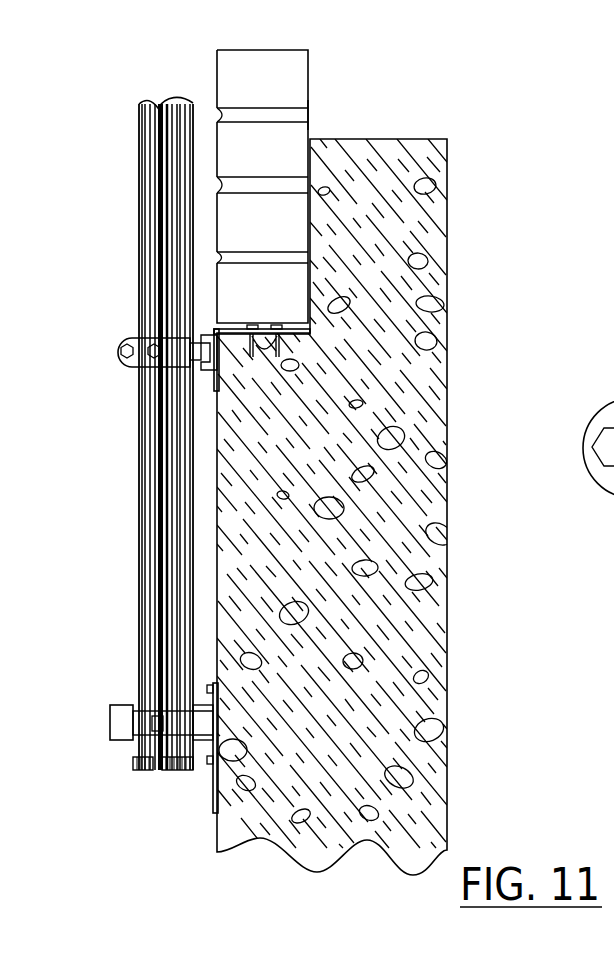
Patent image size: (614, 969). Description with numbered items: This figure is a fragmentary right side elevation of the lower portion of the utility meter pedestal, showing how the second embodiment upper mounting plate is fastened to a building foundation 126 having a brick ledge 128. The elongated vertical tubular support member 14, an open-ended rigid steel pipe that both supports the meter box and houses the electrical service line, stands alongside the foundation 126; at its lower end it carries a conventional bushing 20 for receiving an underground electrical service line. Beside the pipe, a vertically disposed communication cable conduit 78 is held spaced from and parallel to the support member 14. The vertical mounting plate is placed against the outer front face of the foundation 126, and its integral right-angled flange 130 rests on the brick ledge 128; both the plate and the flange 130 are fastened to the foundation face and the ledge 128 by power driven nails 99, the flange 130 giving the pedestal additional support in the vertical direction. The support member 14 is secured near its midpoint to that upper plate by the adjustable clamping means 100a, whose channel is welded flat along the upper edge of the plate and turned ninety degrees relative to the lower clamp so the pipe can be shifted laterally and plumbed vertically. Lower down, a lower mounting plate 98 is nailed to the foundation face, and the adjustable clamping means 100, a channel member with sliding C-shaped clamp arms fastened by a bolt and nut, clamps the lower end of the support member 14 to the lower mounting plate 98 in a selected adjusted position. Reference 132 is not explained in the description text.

The elongated vertical tubular support member 14 is at (150, 118).
The communication cable conduit 78 is at (183, 120).
The block side face 132 is at (309, 112).
The building foundation 126 is at (388, 152).
The integral flange 130 is at (236, 328).
The power driven nails 99 is at (276, 325).
The brick ledge 128 is at (293, 332).
The lower mounting plate 98 is at (215, 778).
The bushing 20 is at (148, 766).
The adjustable clamping means 100 is at (124, 768).
The adjustable clamping means 100a is at (592, 479).